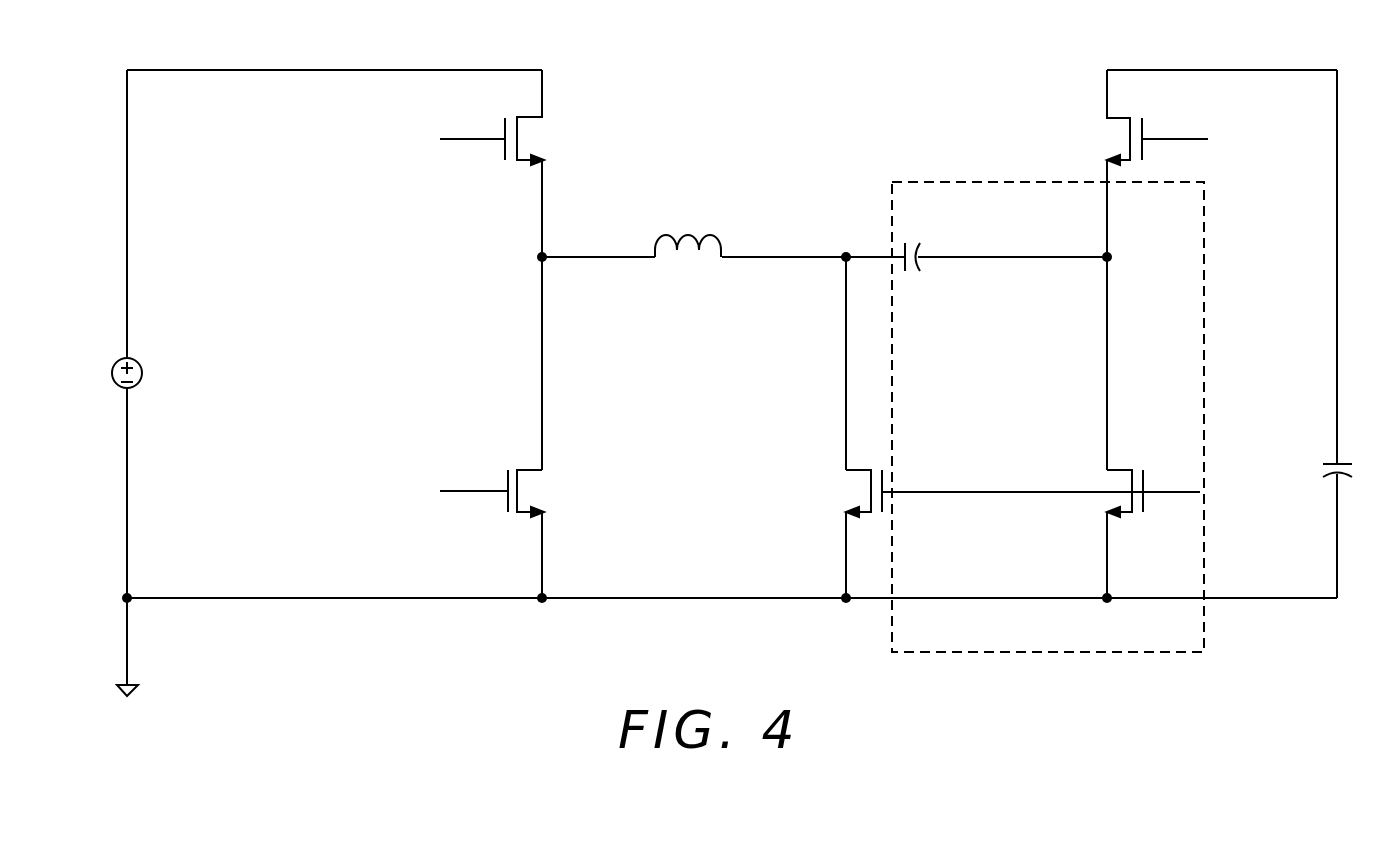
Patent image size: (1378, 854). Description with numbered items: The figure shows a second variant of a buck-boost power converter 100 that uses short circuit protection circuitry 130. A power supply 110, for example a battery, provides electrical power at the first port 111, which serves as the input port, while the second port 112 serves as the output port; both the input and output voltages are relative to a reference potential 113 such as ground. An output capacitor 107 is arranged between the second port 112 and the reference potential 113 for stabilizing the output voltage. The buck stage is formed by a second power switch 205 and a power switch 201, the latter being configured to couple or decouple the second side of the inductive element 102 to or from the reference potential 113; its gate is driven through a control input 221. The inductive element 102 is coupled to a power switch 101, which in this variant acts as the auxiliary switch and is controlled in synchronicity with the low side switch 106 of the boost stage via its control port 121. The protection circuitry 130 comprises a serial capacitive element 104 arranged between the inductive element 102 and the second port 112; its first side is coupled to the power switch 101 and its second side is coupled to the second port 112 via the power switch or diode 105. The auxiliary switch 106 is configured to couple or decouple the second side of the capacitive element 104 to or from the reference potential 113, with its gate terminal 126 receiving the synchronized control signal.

The power converter 100 is at (1022, 454).
The power switch 101 is at (861, 490).
The inductive element 102 is at (680, 232).
The capacitive element 104 is at (913, 278).
The second power switch 105 is at (1105, 128).
The auxiliary switch 106 is at (1113, 488).
The output capacitor 107 is at (1318, 470).
The power supply 110 is at (143, 375).
The first port 111 is at (129, 327).
The second port 112 is at (1337, 372).
The reference potential 113 is at (138, 681).
The control port 121 is at (1022, 495).
The gate terminal 126 is at (1182, 496).
The short circuit protection circuitry 130 is at (891, 633).
The power switch 201 is at (540, 484).
The second power switch 205 is at (549, 129).
The gate input 221 is at (468, 493).